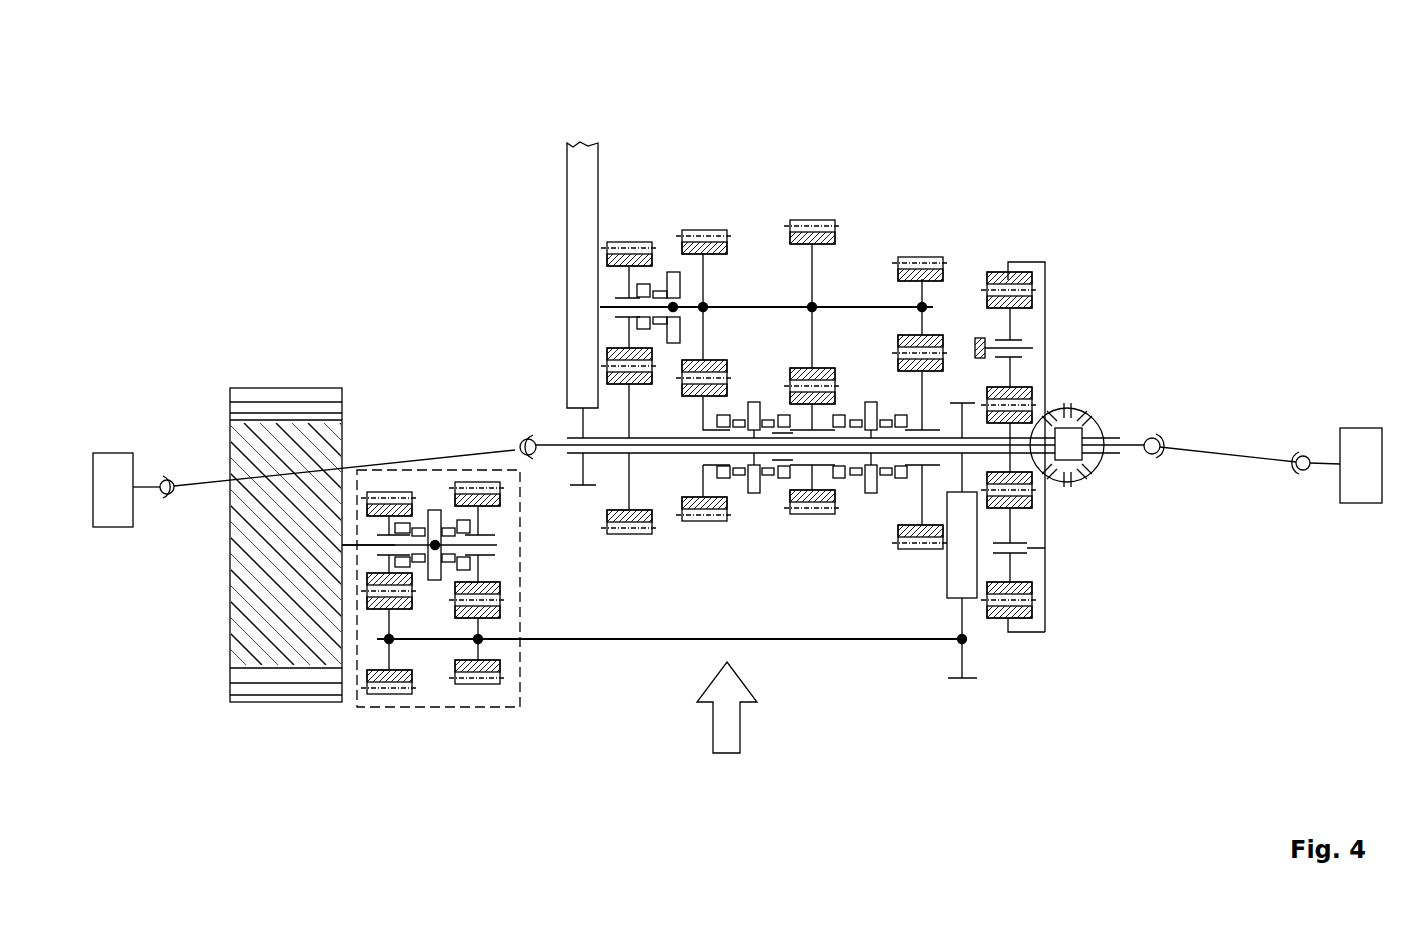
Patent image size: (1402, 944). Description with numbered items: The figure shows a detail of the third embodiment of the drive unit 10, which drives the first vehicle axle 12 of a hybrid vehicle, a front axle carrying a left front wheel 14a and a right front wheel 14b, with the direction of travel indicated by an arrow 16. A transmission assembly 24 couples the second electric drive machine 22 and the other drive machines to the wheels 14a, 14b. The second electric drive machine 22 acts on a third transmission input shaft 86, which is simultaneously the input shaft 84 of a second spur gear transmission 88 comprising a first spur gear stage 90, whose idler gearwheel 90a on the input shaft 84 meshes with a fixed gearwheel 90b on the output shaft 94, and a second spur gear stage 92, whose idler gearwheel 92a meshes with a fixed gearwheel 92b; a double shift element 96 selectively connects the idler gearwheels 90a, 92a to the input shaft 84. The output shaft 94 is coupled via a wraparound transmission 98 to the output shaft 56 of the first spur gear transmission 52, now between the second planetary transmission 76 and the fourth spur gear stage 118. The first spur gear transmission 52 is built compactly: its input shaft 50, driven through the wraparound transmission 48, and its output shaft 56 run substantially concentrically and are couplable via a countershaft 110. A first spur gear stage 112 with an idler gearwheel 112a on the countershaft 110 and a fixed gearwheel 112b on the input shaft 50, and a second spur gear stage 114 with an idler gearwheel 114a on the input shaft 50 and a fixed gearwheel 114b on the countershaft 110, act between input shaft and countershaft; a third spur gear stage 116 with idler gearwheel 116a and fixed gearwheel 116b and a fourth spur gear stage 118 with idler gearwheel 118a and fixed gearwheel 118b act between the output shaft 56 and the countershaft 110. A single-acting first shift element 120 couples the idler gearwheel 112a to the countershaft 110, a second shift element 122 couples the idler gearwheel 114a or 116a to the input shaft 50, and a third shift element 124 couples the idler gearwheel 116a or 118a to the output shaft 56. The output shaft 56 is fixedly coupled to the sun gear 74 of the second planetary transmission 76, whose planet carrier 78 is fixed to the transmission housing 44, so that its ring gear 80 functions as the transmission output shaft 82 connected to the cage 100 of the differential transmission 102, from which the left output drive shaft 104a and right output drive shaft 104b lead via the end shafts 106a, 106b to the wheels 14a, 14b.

The drive unit 10 is at (1048, 113).
The first vehicle axle 12 is at (1222, 421).
The left front wheel 14a is at (117, 452).
The right front wheel 14b is at (1352, 428).
The arrow 16 is at (742, 722).
The second electric drive machine 22 is at (258, 715).
The transmission assembly 24 is at (1084, 193).
The transmission housing 44 is at (980, 336).
The wraparound transmission 48 is at (555, 206).
The input shaft 50 is at (655, 455).
The first spur gear transmission 52 is at (942, 146).
The output shaft 56 is at (940, 430).
The sun gear 74 is at (1018, 462).
The second planetary transmission 76 is at (1030, 653).
The planet carrier 78 is at (1030, 347).
The ring gear 80 is at (1073, 545).
The transmission output shaft 82 is at (1045, 580).
The input shaft 84 is at (265, 597).
The third transmission input shaft 86 is at (342, 549).
The second spur gear transmission 88 is at (424, 748).
The first spur gear stage 90 is at (373, 725).
The idler gearwheel 90a is at (389, 492).
The fixed gearwheel 90b is at (377, 690).
The second spur gear stage 92 is at (468, 725).
The idler gearwheel 92a is at (479, 482).
The fixed gearwheel 92b is at (488, 688).
The output shaft 94 is at (553, 643).
The shift element 96 is at (436, 506).
The wraparound transmission 98 is at (968, 603).
The cage 100 is at (1113, 411).
The differential transmission 102 is at (1099, 412).
The left output drive shaft 104a is at (528, 438).
The right output drive shaft 104b is at (1137, 453).
The end shaft 106a is at (197, 480).
The end shaft 106b is at (1270, 466).
The countershaft 110 is at (862, 305).
The first spur gear stage 112 is at (627, 238).
The idler gearwheel 112a is at (640, 248).
The fixed gearwheel 112b is at (623, 487).
The second spur gear stage 114 is at (708, 228).
The idler gearwheel 114a is at (705, 521).
The fixed gearwheel 114b is at (707, 285).
The third spur gear stage 116 is at (800, 217).
The idler gearwheel 116a is at (812, 514).
The fixed gearwheel 116b is at (813, 268).
The fourth spur gear stage 118 is at (917, 243).
The idler gearwheel 118a is at (905, 527).
The fixed gearwheel 118b is at (925, 255).
The first shift element 120 is at (671, 354).
The second shift element 122 is at (757, 399).
The third shift element 124 is at (868, 399).